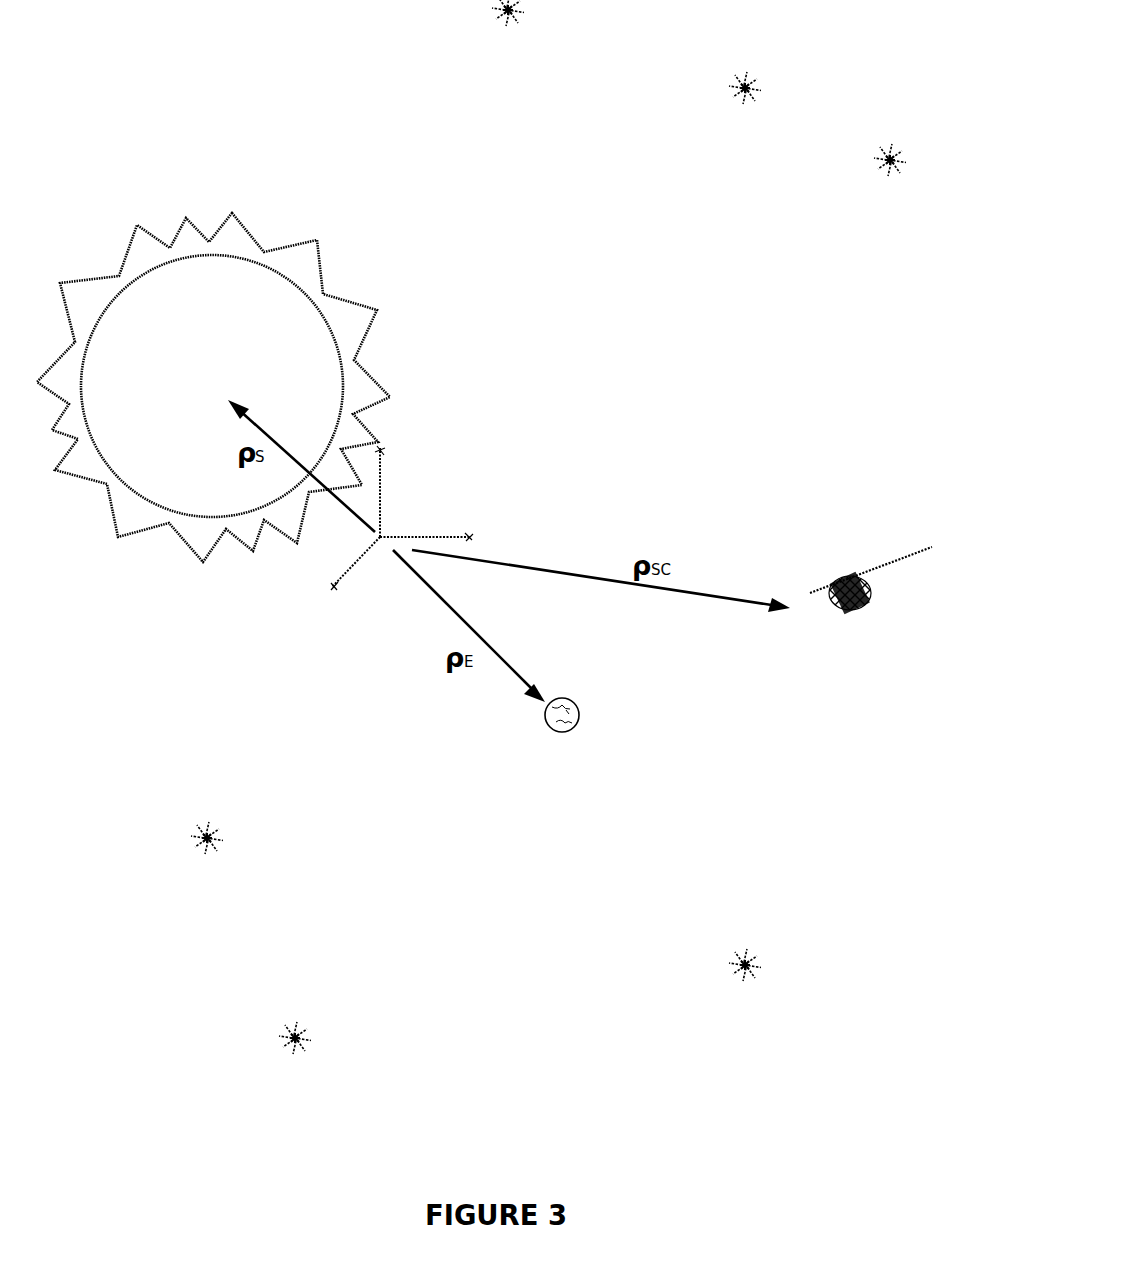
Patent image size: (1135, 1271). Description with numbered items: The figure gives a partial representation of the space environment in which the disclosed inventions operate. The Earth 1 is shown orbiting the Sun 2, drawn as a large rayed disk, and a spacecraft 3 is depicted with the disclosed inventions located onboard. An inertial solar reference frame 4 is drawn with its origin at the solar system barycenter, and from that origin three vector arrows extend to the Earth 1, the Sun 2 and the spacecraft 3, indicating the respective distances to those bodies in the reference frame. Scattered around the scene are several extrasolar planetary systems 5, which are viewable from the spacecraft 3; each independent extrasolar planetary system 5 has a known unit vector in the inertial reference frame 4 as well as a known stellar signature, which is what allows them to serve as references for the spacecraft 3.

The Earth 1 is at (606, 716).
The Sun 2 is at (213, 387).
The spacecraft 3 is at (864, 609).
The inertial solar reference frame 4 is at (499, 518).
The extrasolar planetary system 5 is at (563, 533).